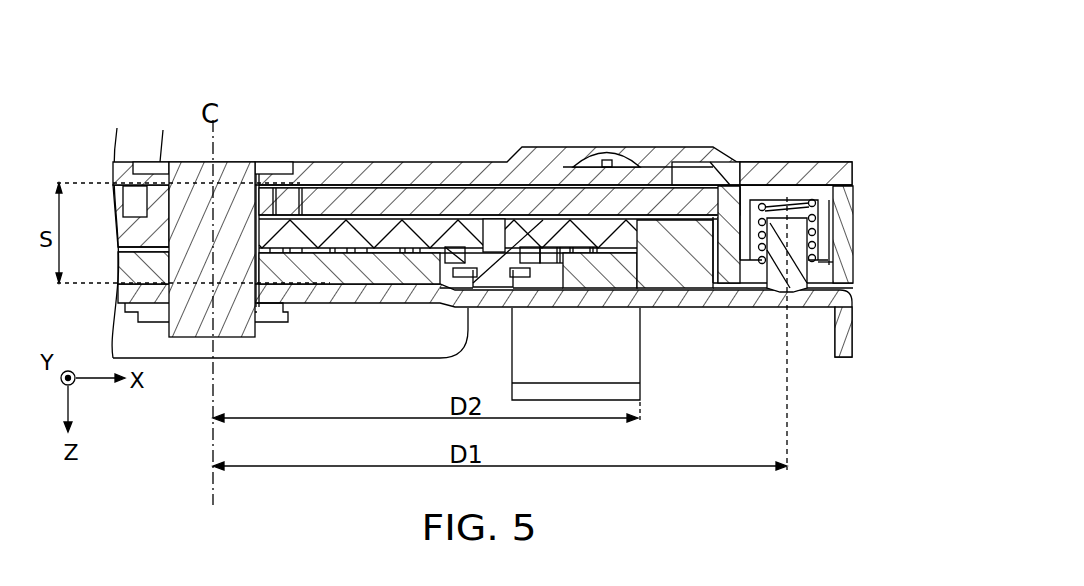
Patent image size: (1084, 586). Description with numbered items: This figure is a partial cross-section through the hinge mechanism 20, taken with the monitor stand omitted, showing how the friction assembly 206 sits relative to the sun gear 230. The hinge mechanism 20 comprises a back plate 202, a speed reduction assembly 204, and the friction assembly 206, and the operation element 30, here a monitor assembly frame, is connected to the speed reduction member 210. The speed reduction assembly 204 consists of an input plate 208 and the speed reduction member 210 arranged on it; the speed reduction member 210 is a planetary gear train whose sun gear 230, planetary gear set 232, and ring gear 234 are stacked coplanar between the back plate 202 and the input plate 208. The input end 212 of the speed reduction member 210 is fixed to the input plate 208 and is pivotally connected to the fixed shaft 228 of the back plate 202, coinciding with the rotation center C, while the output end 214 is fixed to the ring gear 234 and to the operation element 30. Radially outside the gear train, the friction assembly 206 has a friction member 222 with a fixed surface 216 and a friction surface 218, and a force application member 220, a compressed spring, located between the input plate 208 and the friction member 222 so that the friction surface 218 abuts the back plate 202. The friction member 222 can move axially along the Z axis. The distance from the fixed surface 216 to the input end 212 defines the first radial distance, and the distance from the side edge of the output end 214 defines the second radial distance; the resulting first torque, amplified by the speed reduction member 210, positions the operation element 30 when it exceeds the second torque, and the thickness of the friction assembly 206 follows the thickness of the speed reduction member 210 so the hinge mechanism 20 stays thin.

The hinge mechanism 20 is at (94, 68).
The operation element 30 is at (843, 318).
The back plate 202 is at (633, 148).
The speed reduction assembly 204 is at (902, 59).
The friction assembly 206 is at (777, 170).
The input plate 208 is at (840, 230).
The speed reduction member 210 is at (599, 137).
The input end 212 is at (262, 222).
The output end 214 is at (643, 300).
The fixed surface 216 is at (826, 262).
The friction surface 218 is at (814, 184).
The force application member 220 is at (797, 216).
The friction member 222 is at (768, 204).
The fixed shaft 228 is at (187, 222).
The sun gear 230 is at (310, 227).
The planetary gear set 232 is at (413, 230).
The ring gear 234 is at (590, 258).